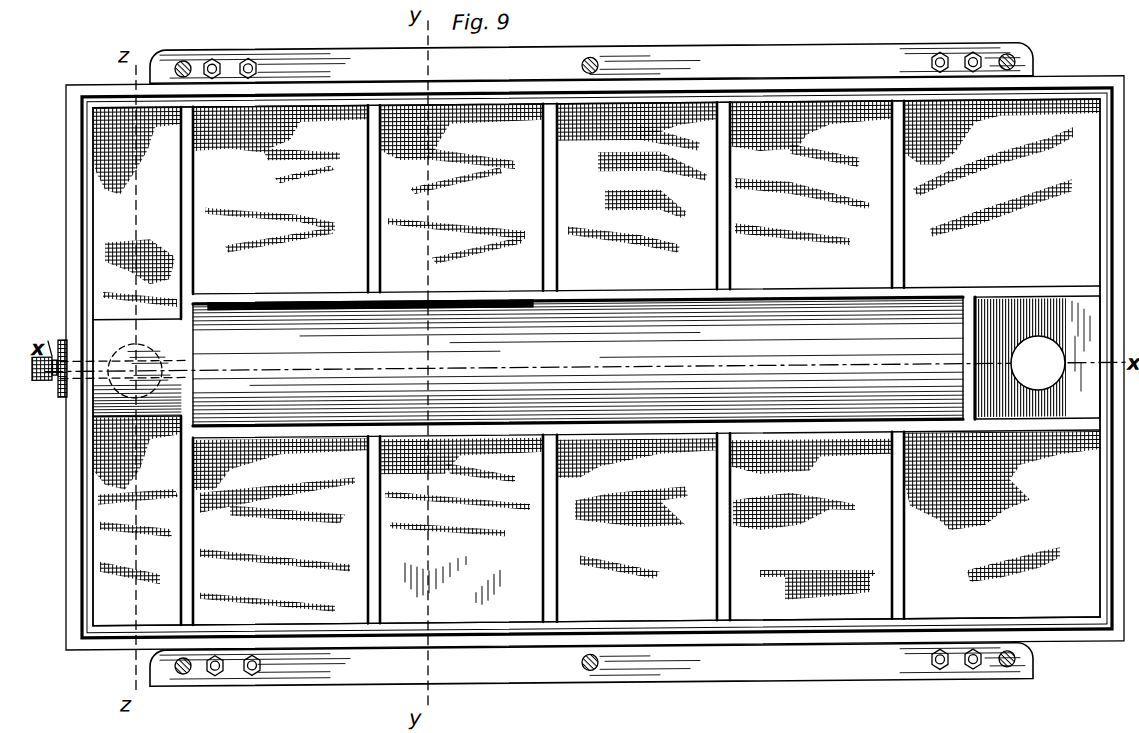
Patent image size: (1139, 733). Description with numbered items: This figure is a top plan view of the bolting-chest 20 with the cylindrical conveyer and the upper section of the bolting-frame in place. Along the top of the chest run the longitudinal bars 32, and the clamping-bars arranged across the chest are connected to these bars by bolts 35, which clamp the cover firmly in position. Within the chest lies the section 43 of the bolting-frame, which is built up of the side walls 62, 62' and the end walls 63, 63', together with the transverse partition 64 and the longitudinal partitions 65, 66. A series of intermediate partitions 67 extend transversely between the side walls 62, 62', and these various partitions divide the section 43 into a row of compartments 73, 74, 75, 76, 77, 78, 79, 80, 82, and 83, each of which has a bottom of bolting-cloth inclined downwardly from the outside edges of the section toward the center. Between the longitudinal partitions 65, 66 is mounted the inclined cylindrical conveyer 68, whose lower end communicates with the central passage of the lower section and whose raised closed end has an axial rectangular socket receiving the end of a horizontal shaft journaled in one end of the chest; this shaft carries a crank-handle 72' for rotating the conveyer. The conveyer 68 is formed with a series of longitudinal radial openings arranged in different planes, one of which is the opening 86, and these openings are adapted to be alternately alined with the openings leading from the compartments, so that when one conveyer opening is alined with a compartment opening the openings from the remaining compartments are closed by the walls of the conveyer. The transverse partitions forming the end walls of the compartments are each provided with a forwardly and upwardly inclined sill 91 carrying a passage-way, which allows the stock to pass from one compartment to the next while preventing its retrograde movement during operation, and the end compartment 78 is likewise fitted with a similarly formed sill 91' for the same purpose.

The bolting-chest 20 is at (695, 97).
The longitudinal bars 32 is at (591, 365).
The bolts 35 is at (187, 64).
The section of the bolting-frame 43 is at (792, 254).
The side wall 62 is at (596, 649).
The side wall 62' is at (596, 80).
The end wall 63 is at (65, 367).
The end wall 63' is at (1076, 358).
The transverse partition 64 is at (172, 195).
The longitudinal partition 65 is at (532, 431).
The longitudinal partition 66 is at (503, 301).
The intermediate partitions 67 is at (374, 215).
The inclined cylindrical conveyer 68 is at (578, 361).
The crank-handle 72' is at (49, 355).
The compartment 73 is at (1002, 507).
The compartment 74 is at (811, 519).
The compartment 75 is at (637, 521).
The compartment 76 is at (461, 521).
The compartment 77 is at (280, 525).
The end compartment 78 is at (137, 501).
The compartment 79 is at (280, 192).
The compartment 80 is at (461, 184).
The compartment 82 is at (811, 172).
The compartment 83 is at (1002, 168).
The longitudinal radial opening 86 is at (437, 315).
The inclined sill 91 is at (637, 178).
The sill 91' is at (130, 362).